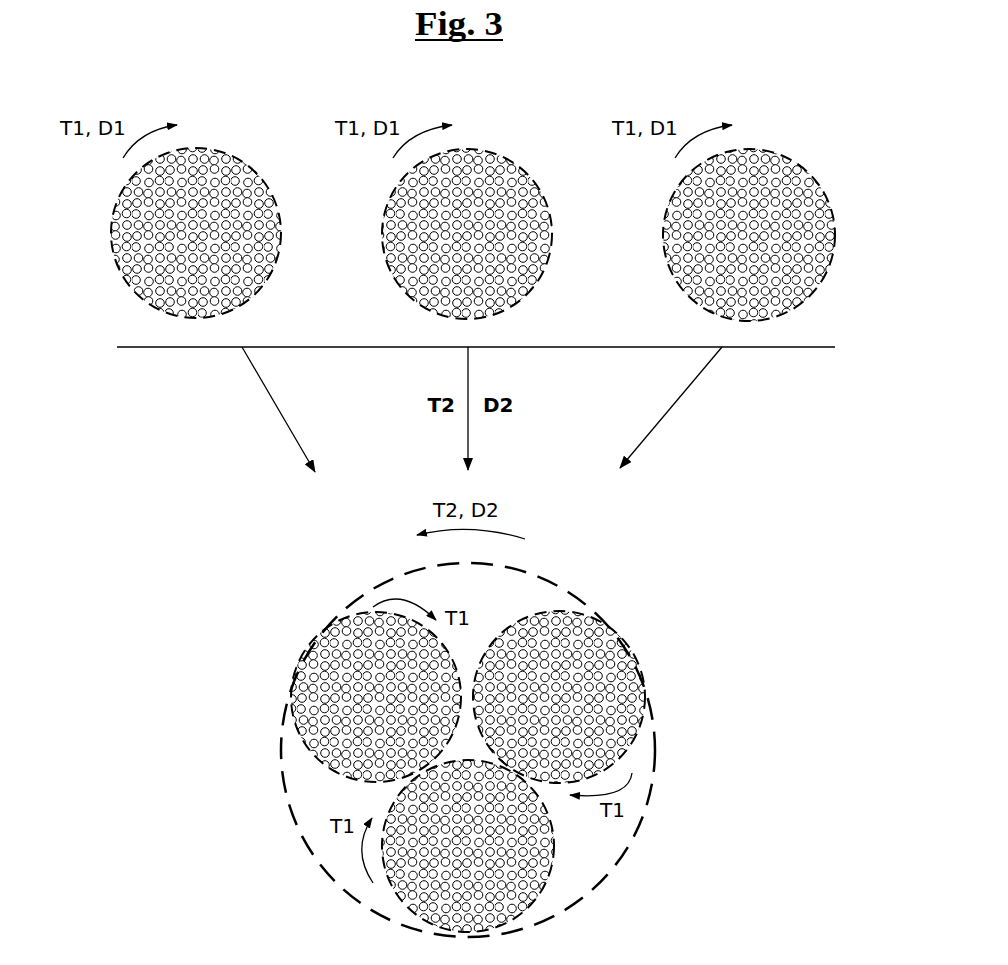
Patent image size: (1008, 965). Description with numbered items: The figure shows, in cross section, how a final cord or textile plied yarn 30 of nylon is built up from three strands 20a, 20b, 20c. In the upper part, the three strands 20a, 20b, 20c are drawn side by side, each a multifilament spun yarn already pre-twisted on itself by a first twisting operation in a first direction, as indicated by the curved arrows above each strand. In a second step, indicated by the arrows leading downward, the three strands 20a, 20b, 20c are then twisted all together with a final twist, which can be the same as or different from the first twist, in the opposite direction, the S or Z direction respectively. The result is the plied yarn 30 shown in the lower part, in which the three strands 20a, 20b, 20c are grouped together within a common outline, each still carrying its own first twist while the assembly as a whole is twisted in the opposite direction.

The strand 20a is at (117, 210).
The strand 20b is at (552, 217).
The strand 20c is at (825, 195).
The textile plied yarn 30 is at (592, 595).